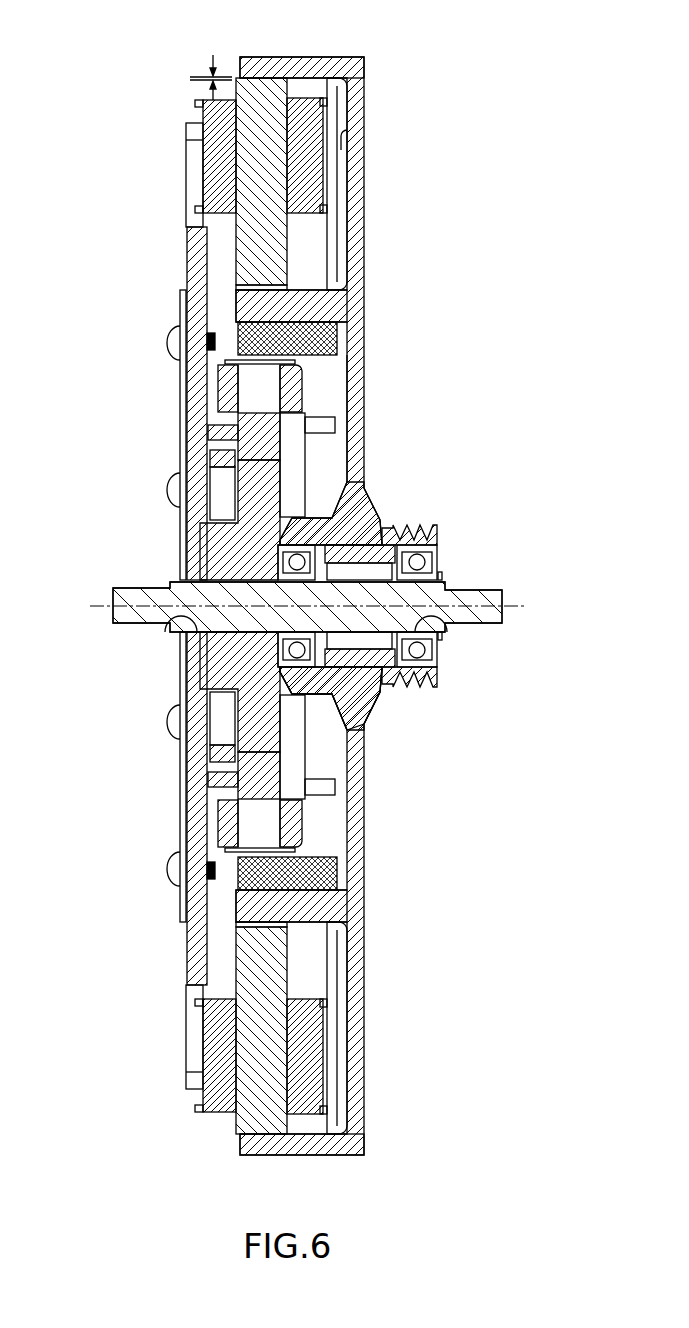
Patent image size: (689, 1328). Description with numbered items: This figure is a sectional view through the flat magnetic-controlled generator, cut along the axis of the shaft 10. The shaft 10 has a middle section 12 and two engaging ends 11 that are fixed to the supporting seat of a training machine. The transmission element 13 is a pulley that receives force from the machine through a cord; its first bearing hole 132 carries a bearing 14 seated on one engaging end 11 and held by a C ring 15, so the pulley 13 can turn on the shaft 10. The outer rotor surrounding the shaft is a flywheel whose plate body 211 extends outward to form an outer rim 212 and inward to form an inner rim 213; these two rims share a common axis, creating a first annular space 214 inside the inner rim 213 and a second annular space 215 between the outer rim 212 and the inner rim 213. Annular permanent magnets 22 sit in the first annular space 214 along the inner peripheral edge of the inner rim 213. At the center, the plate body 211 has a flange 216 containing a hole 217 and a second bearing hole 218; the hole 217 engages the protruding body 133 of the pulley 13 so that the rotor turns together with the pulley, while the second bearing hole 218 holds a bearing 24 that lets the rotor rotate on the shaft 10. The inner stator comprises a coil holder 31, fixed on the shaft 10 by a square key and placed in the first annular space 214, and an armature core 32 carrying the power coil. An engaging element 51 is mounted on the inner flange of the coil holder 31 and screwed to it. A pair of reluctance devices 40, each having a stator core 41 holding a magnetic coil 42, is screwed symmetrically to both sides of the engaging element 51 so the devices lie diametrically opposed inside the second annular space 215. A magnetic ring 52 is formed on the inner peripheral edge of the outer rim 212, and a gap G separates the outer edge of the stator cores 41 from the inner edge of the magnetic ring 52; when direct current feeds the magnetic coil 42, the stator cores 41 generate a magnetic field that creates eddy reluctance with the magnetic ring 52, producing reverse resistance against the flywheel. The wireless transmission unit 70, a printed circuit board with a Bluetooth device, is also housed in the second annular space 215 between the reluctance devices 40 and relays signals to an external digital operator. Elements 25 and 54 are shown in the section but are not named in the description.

The shaft 10 is at (153, 698).
The engaging ends 11 is at (130, 617).
The middle section 12 is at (175, 617).
The transmission element 13 is at (432, 623).
The first bearing hole 132 is at (432, 532).
The protruding body 133 is at (362, 680).
The bearing 14 is at (415, 562).
The C ring 15 is at (442, 580).
The permanent magnets 22 is at (318, 323).
The bearing 24 is at (302, 650).
The rotor member 25 is at (310, 648).
The coil holder 31 is at (215, 552).
The armature core 32 is at (250, 395).
The reluctance devices 40 is at (189, 606).
The stator core 41 is at (248, 118).
The magnetic coil 42 is at (218, 177).
The engaging element 51 is at (195, 833).
The magnetic ring 52 is at (290, 78).
The screw 54 is at (182, 462).
The wireless transmission unit 70 is at (225, 905).
The plate body 211 is at (355, 195).
The outer rim 212 is at (318, 62).
The inner rim 213 is at (302, 305).
The first annular space 214 is at (340, 393).
The second annular space 215 is at (340, 138).
The flange 216 is at (360, 505).
The hole 217 is at (355, 548).
The second bearing hole 218 is at (302, 545).
The gap G is at (211, 66).